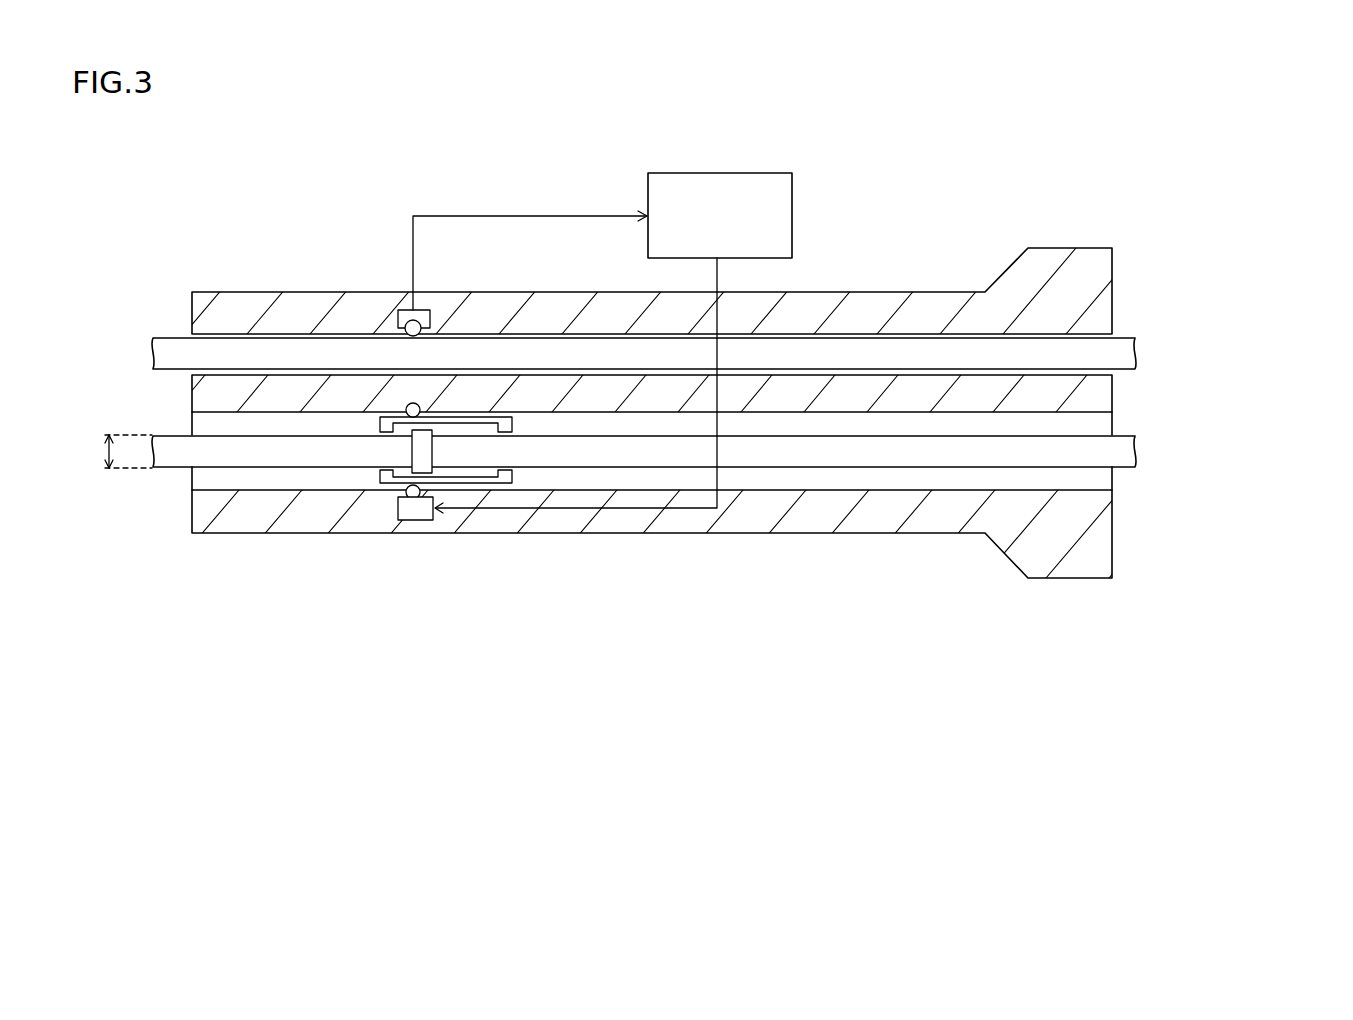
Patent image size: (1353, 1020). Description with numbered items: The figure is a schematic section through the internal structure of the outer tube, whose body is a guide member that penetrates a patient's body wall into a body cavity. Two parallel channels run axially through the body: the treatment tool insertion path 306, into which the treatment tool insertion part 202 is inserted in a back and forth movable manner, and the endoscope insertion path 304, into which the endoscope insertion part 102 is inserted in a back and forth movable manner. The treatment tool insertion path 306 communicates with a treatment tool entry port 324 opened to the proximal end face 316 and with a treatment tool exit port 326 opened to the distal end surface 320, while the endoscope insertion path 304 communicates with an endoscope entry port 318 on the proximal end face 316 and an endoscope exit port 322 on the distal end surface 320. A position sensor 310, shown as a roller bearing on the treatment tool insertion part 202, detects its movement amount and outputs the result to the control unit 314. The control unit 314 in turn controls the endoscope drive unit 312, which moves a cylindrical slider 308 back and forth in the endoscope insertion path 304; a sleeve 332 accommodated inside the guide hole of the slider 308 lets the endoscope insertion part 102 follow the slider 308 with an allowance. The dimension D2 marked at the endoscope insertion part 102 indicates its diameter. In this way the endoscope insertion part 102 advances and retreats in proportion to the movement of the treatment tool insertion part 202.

The endoscope insertion part 102 is at (1123, 452).
The treatment tool insertion part 202 is at (1123, 357).
The endoscope insertion path 304 is at (1065, 493).
The treatment tool insertion path 306 is at (1053, 333).
The slider 308 is at (500, 481).
The position sensor 310 is at (403, 310).
The endoscope drive unit 312 is at (410, 512).
The control unit 314 is at (720, 173).
The proximal end face 316 is at (1113, 568).
The endoscope entry port 318 is at (1125, 428).
The distal end surface 320 is at (193, 508).
The endoscope exit port 322 is at (188, 432).
The treatment tool entry port 324 is at (1125, 330).
The treatment tool exit port 326 is at (188, 333).
The sleeve 332 is at (417, 450).
The inner diameter of endoscope insertion path D2 is at (107, 451).